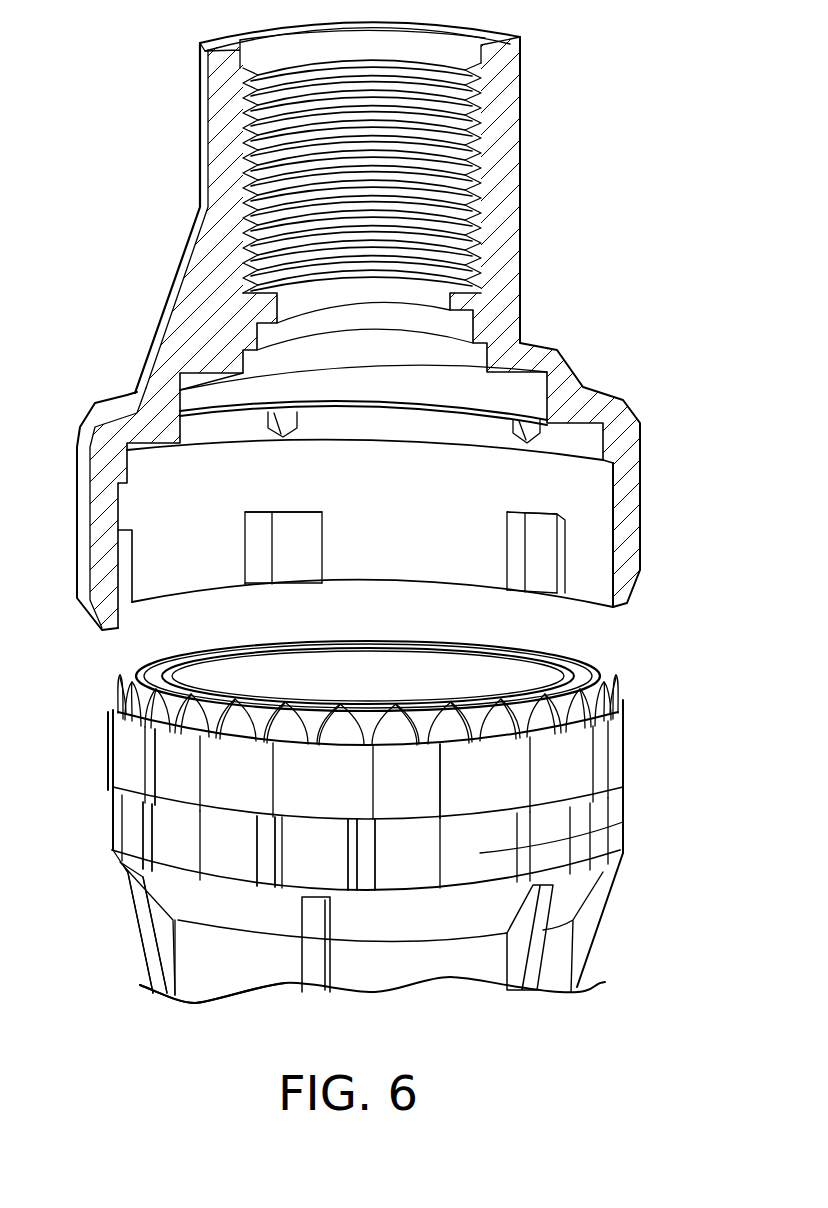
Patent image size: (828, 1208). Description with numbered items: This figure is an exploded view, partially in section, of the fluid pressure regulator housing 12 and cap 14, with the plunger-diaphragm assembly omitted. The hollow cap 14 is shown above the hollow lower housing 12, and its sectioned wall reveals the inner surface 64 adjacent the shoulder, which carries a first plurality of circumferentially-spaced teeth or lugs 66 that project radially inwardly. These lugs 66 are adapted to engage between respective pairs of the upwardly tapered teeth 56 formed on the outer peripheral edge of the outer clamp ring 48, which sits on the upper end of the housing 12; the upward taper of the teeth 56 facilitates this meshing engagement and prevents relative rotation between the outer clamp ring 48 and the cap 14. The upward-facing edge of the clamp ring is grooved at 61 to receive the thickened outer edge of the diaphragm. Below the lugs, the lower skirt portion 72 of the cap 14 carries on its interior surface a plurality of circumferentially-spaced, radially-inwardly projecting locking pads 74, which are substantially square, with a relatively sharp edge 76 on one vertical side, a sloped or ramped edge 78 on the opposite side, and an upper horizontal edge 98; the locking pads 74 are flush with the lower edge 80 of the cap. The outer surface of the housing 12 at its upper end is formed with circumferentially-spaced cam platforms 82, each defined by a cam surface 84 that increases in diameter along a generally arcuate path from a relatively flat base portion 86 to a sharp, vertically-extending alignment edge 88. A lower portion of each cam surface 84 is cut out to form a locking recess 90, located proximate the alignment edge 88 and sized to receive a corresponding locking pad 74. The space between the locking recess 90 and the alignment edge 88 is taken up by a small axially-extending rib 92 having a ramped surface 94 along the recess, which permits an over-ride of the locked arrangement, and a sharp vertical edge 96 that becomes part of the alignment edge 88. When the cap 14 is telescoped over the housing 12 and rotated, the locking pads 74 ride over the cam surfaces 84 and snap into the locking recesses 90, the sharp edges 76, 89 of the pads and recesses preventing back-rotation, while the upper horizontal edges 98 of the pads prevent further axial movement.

The lower housing 12 is at (630, 801).
The cap 14 is at (162, 299).
The outer clamp ring 48 is at (233, 748).
The teeth 56 is at (372, 716).
The groove 61 is at (606, 673).
The inner surface 64 is at (485, 428).
The lugs 66 is at (283, 414).
The lower skirt portion 72 is at (590, 513).
The locking pads 74 is at (262, 591).
The sharp edge 76 is at (324, 549).
The ramped edge 78 is at (244, 557).
The lower edge 80 is at (118, 635).
The cam platforms 82 is at (238, 919).
The cam surface 84 is at (262, 853).
The base portion 86 is at (175, 861).
The alignment edge 88 is at (152, 763).
The sharp edge 89 is at (130, 826).
The locking recess 90 is at (325, 881).
The rib 92 is at (137, 853).
The ramped surface 94 is at (346, 847).
The sharp vertical edge 96 is at (378, 857).
The upper horizontal edges 98 is at (294, 510).